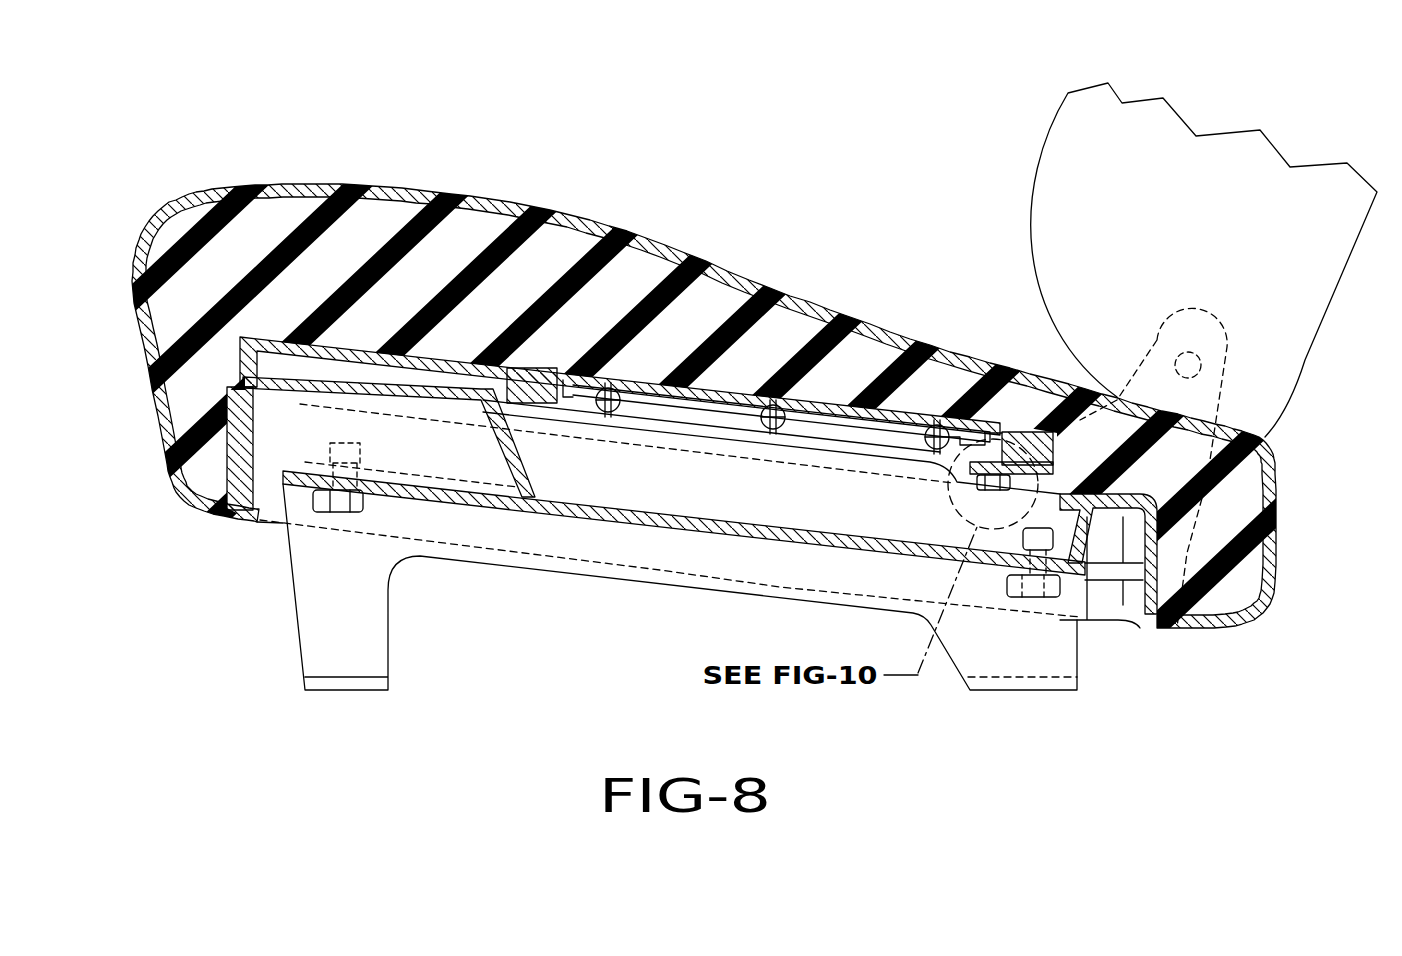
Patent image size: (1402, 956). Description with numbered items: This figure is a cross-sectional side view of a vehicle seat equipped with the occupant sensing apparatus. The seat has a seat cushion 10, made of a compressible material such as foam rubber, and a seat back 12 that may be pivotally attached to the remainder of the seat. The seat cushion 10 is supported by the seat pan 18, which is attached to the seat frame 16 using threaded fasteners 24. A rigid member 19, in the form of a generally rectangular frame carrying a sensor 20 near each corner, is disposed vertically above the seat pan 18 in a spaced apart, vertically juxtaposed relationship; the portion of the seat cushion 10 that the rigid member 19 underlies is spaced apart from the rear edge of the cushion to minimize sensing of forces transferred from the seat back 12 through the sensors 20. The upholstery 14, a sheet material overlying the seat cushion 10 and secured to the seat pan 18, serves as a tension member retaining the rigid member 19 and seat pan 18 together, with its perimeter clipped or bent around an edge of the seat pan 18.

The seat cushion 10 is at (550, 267).
The seat back 12 is at (1057, 160).
The upholstery 14 is at (720, 287).
The seat frame 16 is at (627, 523).
The seat pan 18 is at (223, 470).
The rigid member 19 is at (250, 357).
The sensor 20 is at (257, 373).
The threaded fastener 24 is at (333, 497).